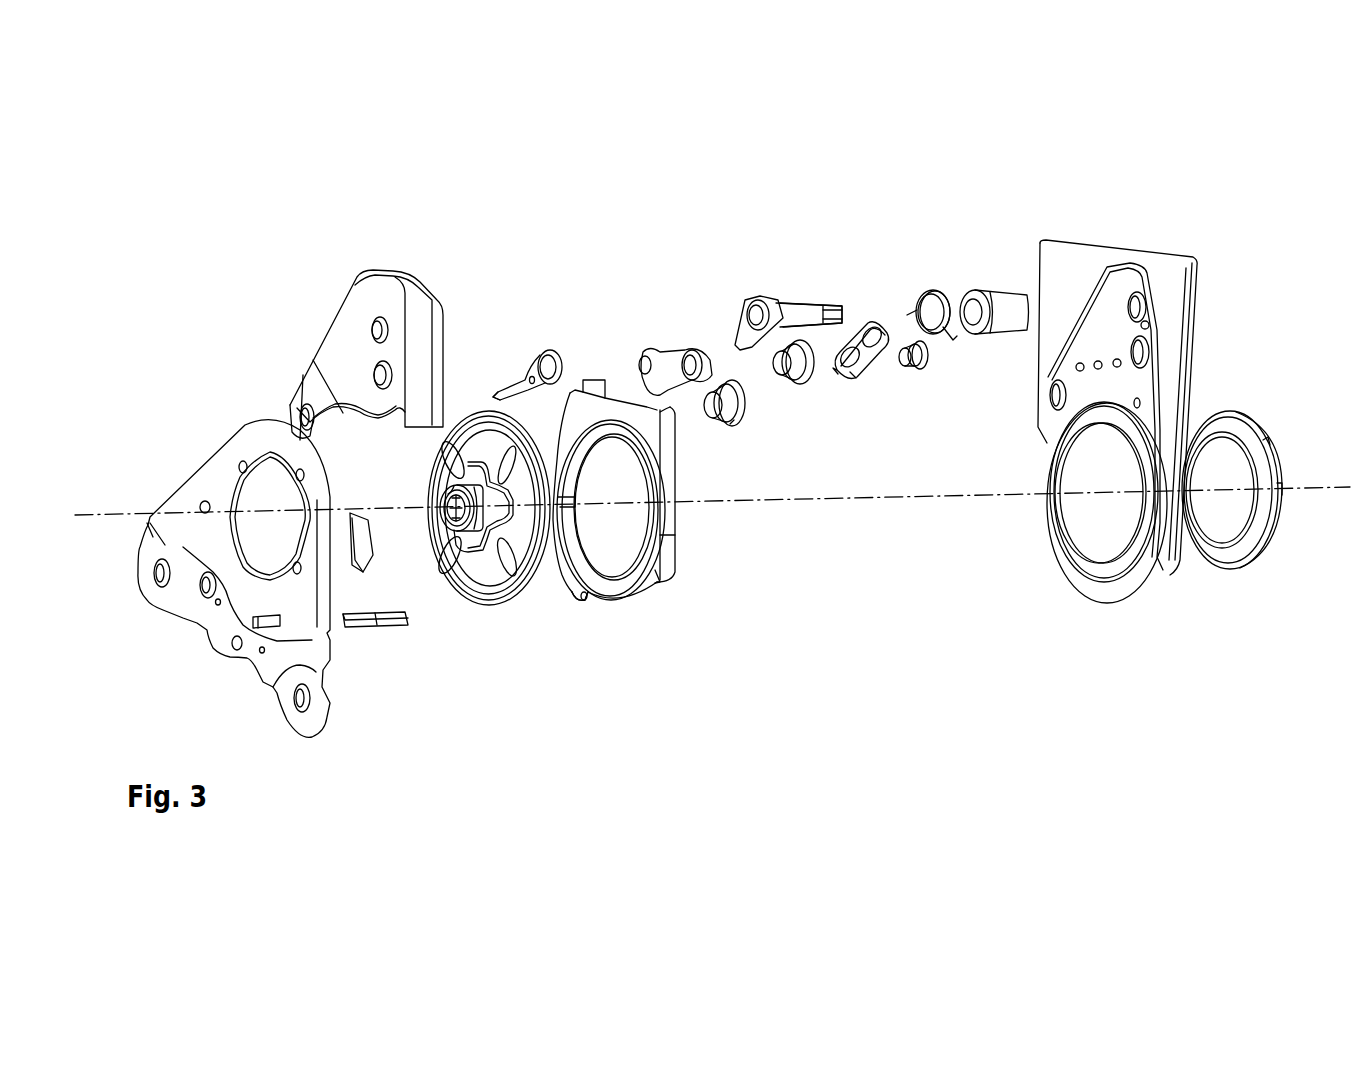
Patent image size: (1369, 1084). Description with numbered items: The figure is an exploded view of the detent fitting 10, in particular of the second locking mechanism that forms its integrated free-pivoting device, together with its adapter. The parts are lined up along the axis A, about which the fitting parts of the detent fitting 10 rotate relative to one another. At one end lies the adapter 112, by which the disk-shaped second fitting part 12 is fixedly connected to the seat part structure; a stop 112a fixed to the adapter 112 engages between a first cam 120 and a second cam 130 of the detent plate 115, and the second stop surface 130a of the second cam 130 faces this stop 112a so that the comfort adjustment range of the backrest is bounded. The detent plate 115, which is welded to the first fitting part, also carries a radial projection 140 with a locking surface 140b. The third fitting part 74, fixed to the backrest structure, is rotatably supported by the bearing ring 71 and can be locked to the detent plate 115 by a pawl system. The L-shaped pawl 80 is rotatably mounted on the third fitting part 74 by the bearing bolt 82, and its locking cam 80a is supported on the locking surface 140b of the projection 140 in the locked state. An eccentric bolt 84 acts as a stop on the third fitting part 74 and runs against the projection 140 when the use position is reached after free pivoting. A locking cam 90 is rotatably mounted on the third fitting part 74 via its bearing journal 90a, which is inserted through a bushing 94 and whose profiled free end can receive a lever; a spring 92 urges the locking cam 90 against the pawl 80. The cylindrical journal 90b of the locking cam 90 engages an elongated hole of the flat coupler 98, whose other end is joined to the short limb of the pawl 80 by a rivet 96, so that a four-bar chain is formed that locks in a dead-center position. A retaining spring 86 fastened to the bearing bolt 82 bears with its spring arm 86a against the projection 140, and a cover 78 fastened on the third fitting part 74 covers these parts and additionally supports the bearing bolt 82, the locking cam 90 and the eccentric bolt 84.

The detent fitting 10 is at (272, 201).
The second fitting part 12 is at (470, 580).
The bearing ring 71 is at (1218, 547).
The third fitting part 74 is at (1177, 303).
The cover 78 is at (400, 300).
The pawl 80 is at (667, 367).
The locking cam 80a is at (685, 420).
The bearing bolt 82 is at (800, 380).
The eccentric bolt 84 is at (732, 418).
The retaining spring 86 is at (527, 366).
The spring arm 86a is at (497, 393).
The locking cam 90 is at (760, 302).
The bearing journal 90a is at (812, 312).
The cylindrical journal 90b is at (763, 347).
The spring 92 is at (917, 302).
The bushing 94 is at (1007, 308).
The rivet 96 is at (915, 370).
The coupler 98 is at (853, 377).
The adapter 112 is at (315, 712).
The stop 112a is at (372, 620).
The detent plate 115 is at (665, 540).
The first cam 120 is at (673, 570).
The second cam 130 is at (578, 597).
The second stop surface 130a is at (585, 598).
The projection 140 is at (583, 393).
The locking surface 140b is at (622, 400).
The axis A is at (123, 515).